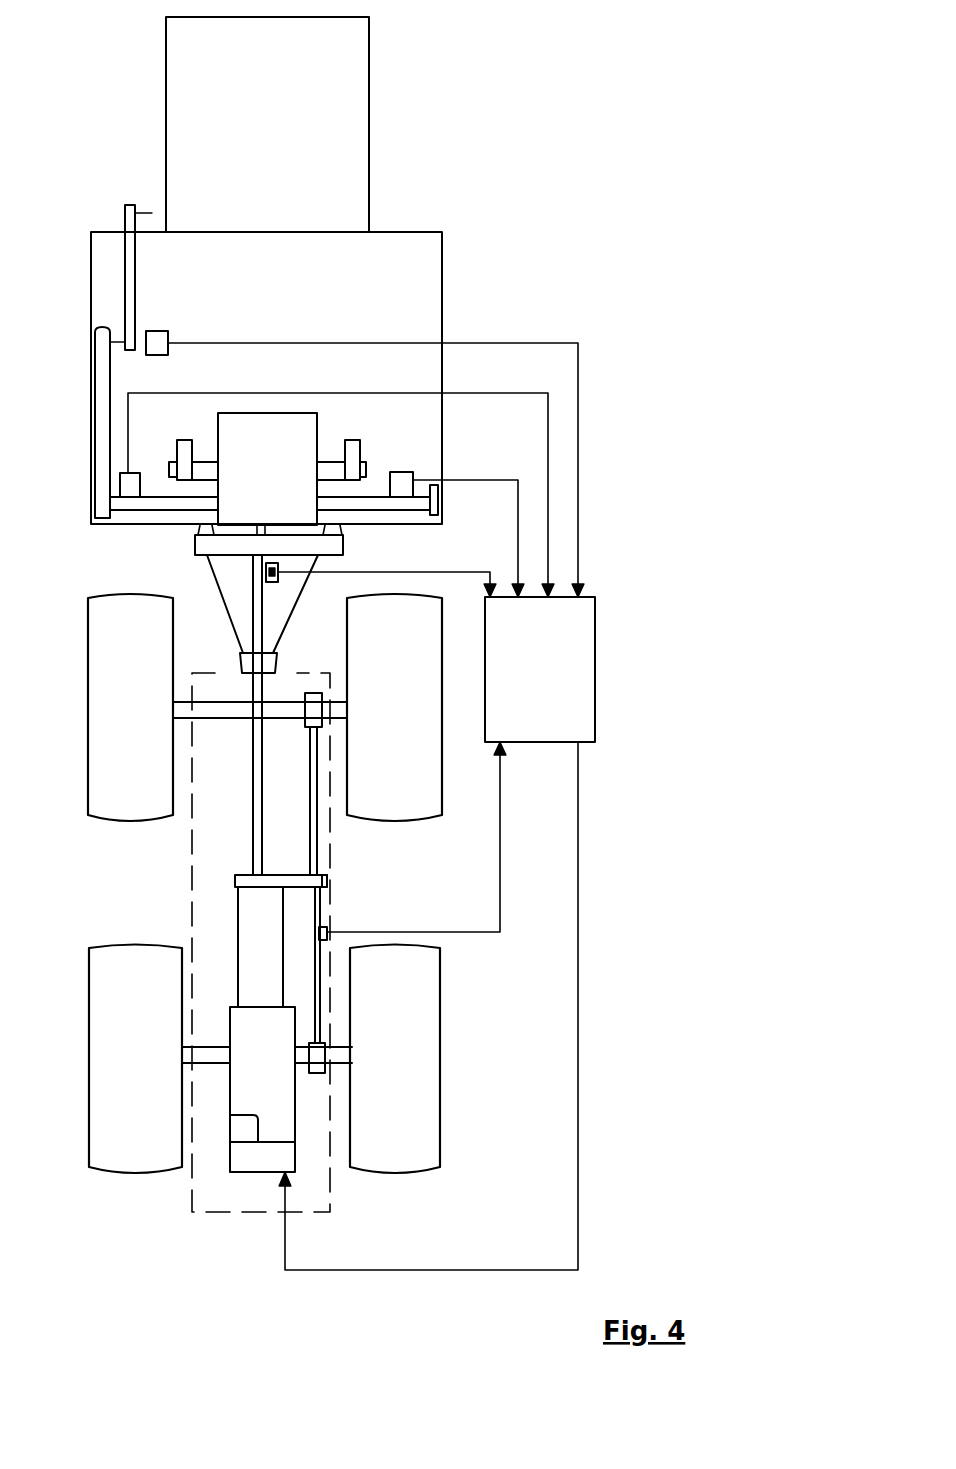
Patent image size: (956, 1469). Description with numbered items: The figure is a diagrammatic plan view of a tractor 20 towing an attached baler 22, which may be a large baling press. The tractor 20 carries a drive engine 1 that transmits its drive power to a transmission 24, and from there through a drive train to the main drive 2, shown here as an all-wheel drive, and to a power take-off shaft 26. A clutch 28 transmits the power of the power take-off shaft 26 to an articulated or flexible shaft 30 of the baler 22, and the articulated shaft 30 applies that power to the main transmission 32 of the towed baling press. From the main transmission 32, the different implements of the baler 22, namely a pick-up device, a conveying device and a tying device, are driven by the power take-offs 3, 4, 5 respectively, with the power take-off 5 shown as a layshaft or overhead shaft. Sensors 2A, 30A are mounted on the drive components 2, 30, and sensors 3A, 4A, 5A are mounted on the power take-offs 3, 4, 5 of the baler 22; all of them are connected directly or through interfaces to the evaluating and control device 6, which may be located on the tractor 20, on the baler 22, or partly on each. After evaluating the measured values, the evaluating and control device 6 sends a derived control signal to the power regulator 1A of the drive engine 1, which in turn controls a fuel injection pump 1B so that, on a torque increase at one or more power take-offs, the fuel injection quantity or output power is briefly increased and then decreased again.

The drive engine 1 is at (262, 1089).
The power regulator 1A is at (253, 1158).
The fuel injection pump 1B is at (237, 1128).
The main drive 2 is at (323, 875).
The sensor 2A is at (327, 927).
The power take-off 3 is at (365, 503).
The sensor 3A is at (400, 475).
The power take-off 4 is at (163, 503).
The sensor 4A is at (130, 482).
The power take-off 5 is at (124, 343).
The sensor 5A is at (160, 338).
The evaluating and control device 6 is at (540, 669).
The tractor 20 is at (322, 1188).
The baler 22 is at (430, 245).
The transmission 24 is at (260, 947).
The power take-off shaft 26 is at (257, 757).
The clutch 28 is at (243, 648).
The articulated shaft 30 is at (260, 596).
The sensor 30A is at (280, 575).
The main transmission 32 is at (267, 469).